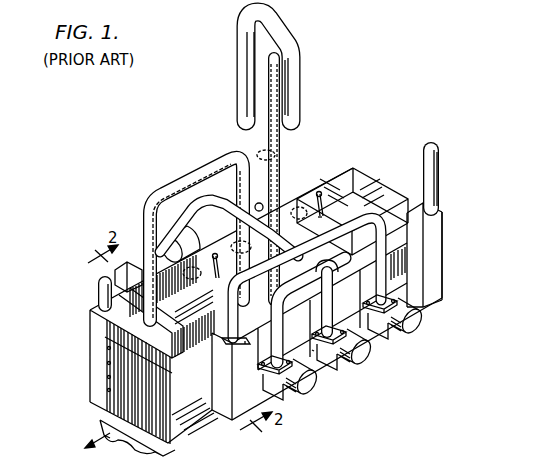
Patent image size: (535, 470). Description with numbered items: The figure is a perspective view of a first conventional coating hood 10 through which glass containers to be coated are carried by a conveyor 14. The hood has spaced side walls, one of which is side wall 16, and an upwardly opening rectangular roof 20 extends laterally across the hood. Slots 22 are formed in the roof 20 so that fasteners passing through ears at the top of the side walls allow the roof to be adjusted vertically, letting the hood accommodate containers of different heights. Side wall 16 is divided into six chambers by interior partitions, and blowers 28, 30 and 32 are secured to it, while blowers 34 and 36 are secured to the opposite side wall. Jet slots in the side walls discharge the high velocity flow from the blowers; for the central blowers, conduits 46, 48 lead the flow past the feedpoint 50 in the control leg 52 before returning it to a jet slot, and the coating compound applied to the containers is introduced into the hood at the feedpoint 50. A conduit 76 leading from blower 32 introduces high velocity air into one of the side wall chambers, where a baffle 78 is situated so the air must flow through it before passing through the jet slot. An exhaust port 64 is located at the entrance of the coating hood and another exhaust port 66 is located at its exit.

The coating hood 10 is at (80, 324).
The conveyor 14 is at (150, 445).
The side wall 16 is at (317, 365).
The roof 20 is at (377, 187).
The slots 22 is at (218, 263).
The blower 28 is at (283, 390).
The blower 30 is at (337, 362).
The blower 32 is at (386, 330).
The blower 34 is at (120, 268).
The blower 36 is at (165, 238).
The conduit 46 is at (323, 228).
The conduit 48 is at (294, 93).
The feedpoint 50 is at (256, 205).
The control leg 52 is at (281, 133).
The exhaust port 64 is at (439, 176).
The exhaust port 66 is at (98, 292).
The conduit 76 is at (220, 337).
The baffle 78 is at (192, 187).